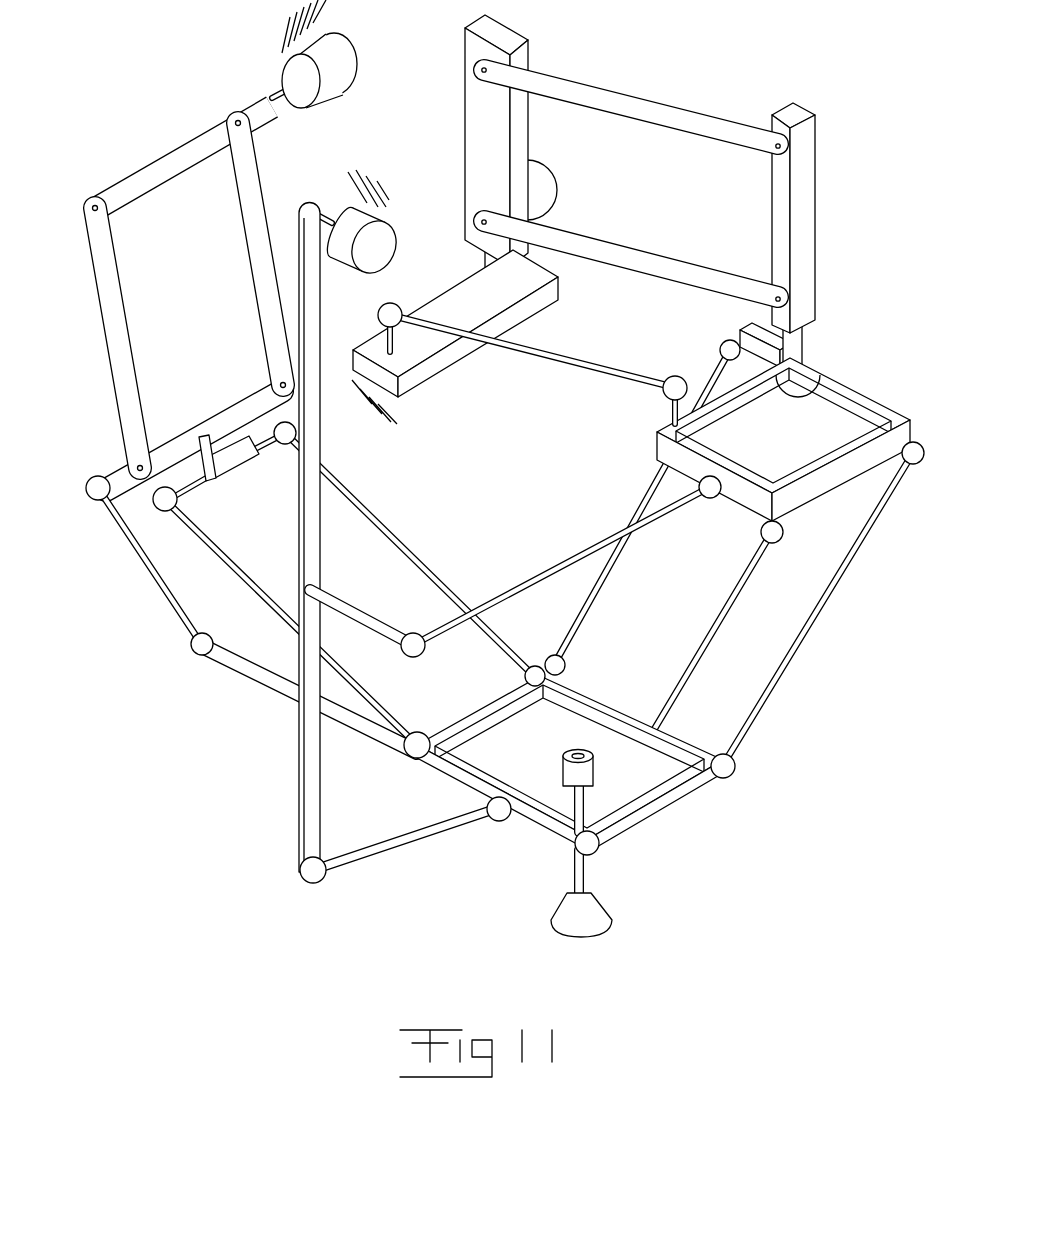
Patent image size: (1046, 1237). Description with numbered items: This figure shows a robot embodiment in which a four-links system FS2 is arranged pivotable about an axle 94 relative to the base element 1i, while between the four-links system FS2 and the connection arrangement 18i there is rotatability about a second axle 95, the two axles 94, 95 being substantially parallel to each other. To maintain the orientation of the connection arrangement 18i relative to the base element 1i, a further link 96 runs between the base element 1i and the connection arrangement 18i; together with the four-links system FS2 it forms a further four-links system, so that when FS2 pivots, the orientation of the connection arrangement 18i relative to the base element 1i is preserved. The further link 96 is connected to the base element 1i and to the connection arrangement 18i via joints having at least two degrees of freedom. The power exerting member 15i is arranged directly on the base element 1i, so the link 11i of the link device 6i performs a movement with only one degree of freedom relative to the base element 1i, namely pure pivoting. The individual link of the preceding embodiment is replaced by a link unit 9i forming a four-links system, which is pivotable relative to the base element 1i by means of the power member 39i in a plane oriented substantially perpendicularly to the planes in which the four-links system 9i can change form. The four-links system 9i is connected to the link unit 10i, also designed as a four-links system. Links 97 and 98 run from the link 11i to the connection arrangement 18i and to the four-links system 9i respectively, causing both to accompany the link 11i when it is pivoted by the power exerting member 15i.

The base element 1i is at (292, 31).
The power member 39i is at (352, 72).
The power exerting member 15i is at (380, 246).
The link unit 9i is at (74, 387).
The four-links system FS2 is at (697, 96).
The axle 94 is at (496, 283).
The axle 95 is at (803, 343).
The further link 96 is at (560, 362).
The link 97 is at (167, 595).
The link 98 is at (545, 578).
The connection arrangement 18i is at (858, 410).
The link unit 10i is at (430, 540).
The link 11i is at (320, 554).
The link device 6i is at (238, 803).